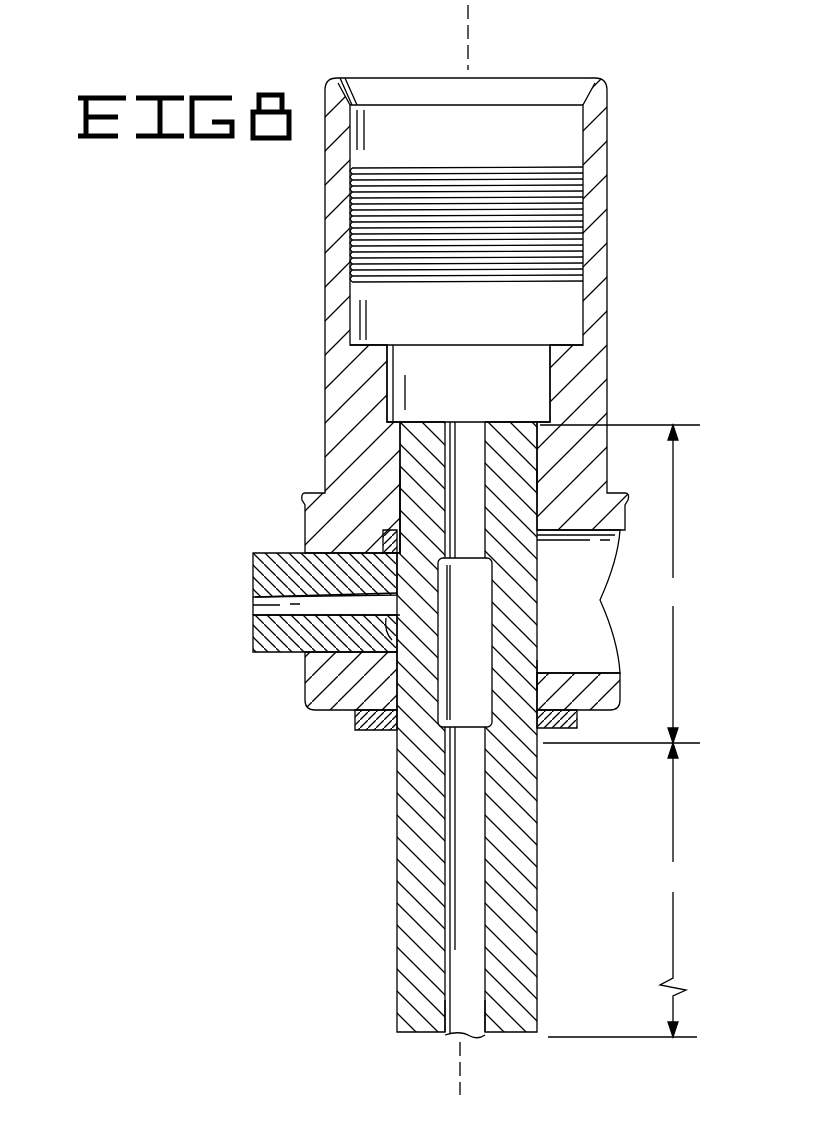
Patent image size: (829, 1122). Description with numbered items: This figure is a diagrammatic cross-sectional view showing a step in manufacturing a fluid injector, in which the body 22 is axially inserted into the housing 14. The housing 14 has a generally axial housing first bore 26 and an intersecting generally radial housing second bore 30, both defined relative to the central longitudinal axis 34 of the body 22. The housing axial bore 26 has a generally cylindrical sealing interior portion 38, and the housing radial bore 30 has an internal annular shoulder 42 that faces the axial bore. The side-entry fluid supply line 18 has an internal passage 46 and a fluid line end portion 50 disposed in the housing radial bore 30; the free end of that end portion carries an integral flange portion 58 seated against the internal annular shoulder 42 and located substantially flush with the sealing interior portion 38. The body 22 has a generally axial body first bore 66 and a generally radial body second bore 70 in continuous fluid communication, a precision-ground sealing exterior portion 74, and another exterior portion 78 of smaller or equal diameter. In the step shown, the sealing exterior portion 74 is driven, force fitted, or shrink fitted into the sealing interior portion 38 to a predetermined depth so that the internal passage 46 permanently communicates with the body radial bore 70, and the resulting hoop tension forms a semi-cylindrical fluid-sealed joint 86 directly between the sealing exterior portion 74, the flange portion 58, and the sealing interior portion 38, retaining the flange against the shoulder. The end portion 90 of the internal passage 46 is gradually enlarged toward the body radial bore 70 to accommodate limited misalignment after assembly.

The housing 14 is at (606, 360).
The side-entry fluid supply line 18 is at (273, 651).
The body 22 is at (539, 851).
The housing first bore 26 is at (404, 467).
The housing second bore 30 is at (315, 568).
The central longitudinal axis 34 is at (468, 22).
The sealing interior portion 38 is at (539, 489).
The internal annular shoulder 42 is at (394, 540).
The internal passage 46 is at (266, 607).
The fluid line end portion 50 is at (361, 656).
The flange portion 58 is at (352, 714).
The body first bore 66 is at (489, 916).
The body second bore 70 is at (422, 592).
The sealing exterior portion 74 is at (620, 584).
The another exterior portion 78 is at (622, 890).
The fluid-sealed joint 86 is at (402, 561).
The end portion of the fluid line internal passage 90 is at (395, 619).